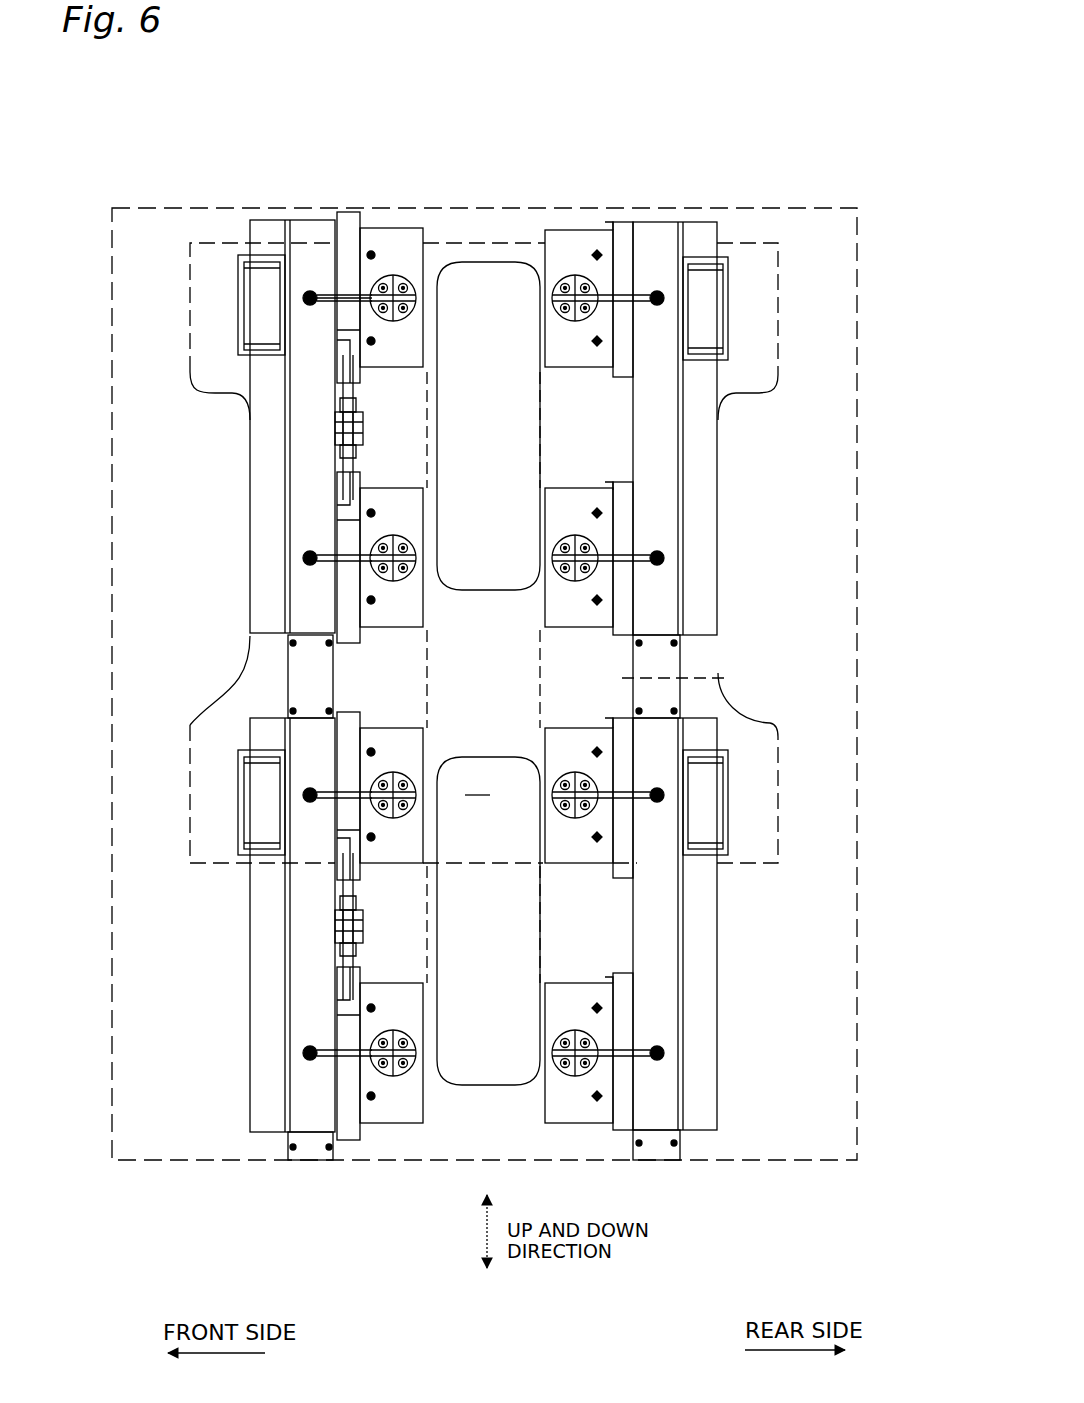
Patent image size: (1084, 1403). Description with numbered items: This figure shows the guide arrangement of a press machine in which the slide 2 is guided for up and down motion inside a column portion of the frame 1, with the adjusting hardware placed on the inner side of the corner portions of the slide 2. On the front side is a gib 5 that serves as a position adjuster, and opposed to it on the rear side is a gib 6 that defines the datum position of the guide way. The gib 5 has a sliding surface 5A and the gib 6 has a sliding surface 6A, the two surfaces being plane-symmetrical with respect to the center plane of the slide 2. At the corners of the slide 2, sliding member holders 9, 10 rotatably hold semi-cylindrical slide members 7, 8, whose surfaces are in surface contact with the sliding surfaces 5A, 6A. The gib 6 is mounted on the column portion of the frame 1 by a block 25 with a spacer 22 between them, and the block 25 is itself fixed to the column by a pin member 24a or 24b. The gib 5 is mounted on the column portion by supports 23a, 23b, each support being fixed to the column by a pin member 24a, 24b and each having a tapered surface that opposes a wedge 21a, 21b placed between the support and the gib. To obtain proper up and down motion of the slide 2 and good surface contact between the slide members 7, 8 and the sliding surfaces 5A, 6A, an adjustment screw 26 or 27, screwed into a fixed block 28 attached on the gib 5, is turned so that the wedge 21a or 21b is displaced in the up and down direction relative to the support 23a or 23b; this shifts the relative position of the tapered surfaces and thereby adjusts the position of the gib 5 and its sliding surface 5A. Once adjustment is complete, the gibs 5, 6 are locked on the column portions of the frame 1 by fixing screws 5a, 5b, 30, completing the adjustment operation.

The frame 1 is at (515, 209).
The slide 2 is at (446, 240).
The gib 5 is at (312, 228).
The sliding surface 5A is at (266, 540).
The fixing screw 5a is at (315, 570).
The fixing screw 5b is at (654, 566).
The gib 6 is at (660, 232).
The sliding surface 6A is at (697, 535).
The semi-cylindrical slide member 7 is at (262, 272).
The semi-cylindrical slide member 8 is at (707, 283).
The sliding member holder 9 is at (238, 292).
The sliding member holder 10 is at (735, 290).
The wedge 21a is at (348, 212).
The wedge 21b is at (365, 476).
The spacer 22 is at (616, 373).
The support 23a is at (427, 283).
The support 23b is at (420, 606).
The pin member 24a is at (577, 283).
The pin member 24b is at (566, 580).
The block 25 is at (573, 363).
The adjustment screw 26 is at (336, 392).
The adjustment screw 27 is at (336, 463).
The fixed block 28 is at (336, 418).
The fixing screw 30 is at (417, 300).